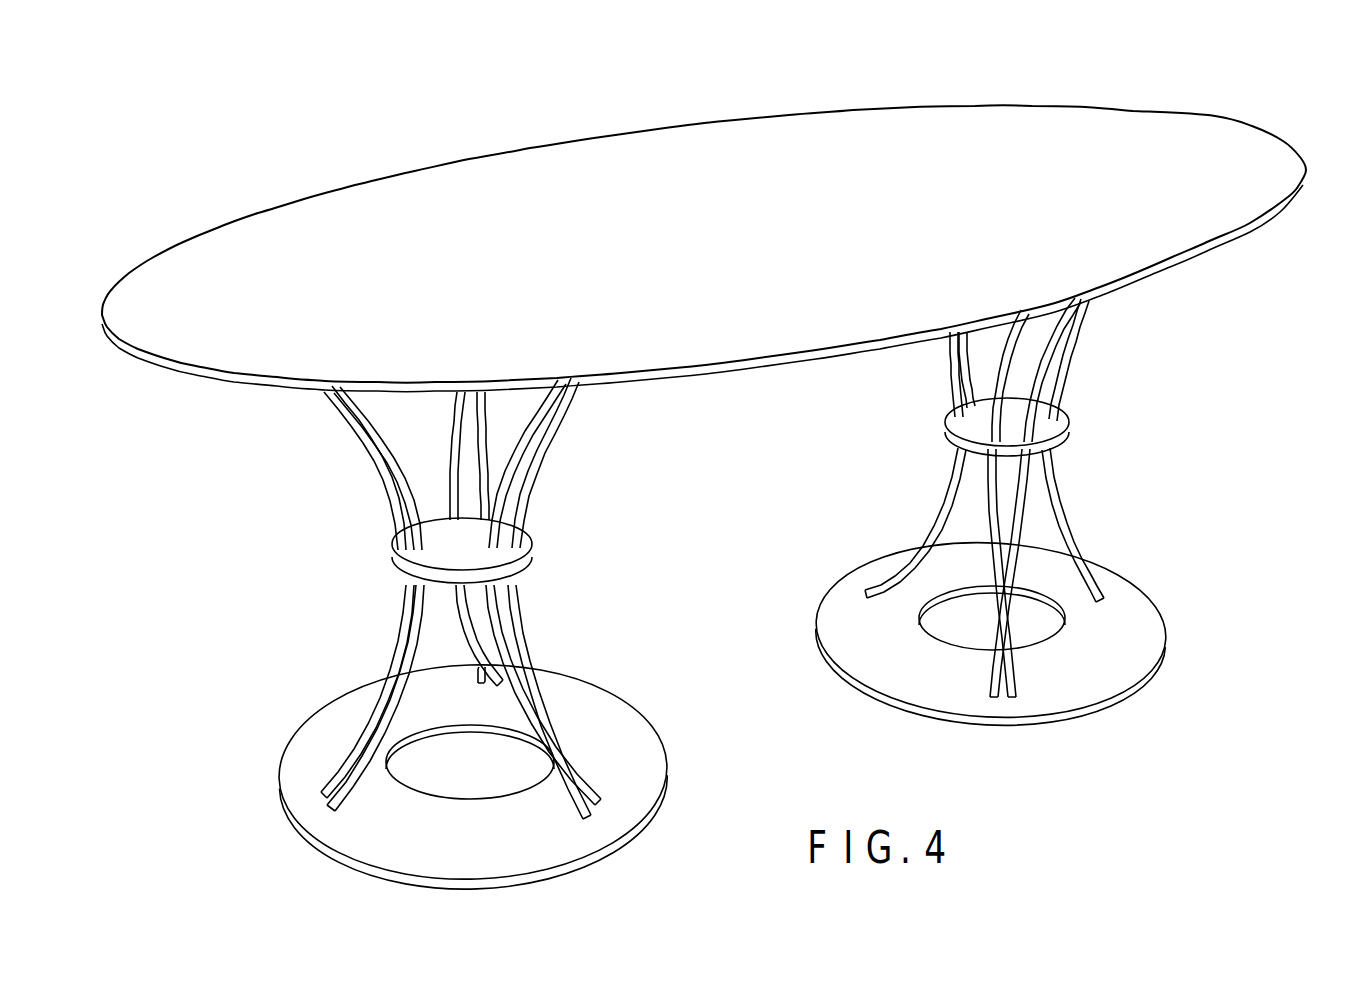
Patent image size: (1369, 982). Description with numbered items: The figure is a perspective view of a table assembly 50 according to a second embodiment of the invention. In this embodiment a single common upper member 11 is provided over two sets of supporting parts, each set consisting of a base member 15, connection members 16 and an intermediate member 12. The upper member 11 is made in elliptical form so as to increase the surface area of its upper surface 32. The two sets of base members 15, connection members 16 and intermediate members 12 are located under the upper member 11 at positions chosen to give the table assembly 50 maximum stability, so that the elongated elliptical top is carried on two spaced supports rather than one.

The table assembly 50 is at (1090, 78).
The upper surface 32 is at (1207, 128).
The upper member 11 is at (1306, 170).
The connection members 16 is at (350, 418).
The intermediate members 12 is at (412, 552).
The base members 15 is at (317, 735).